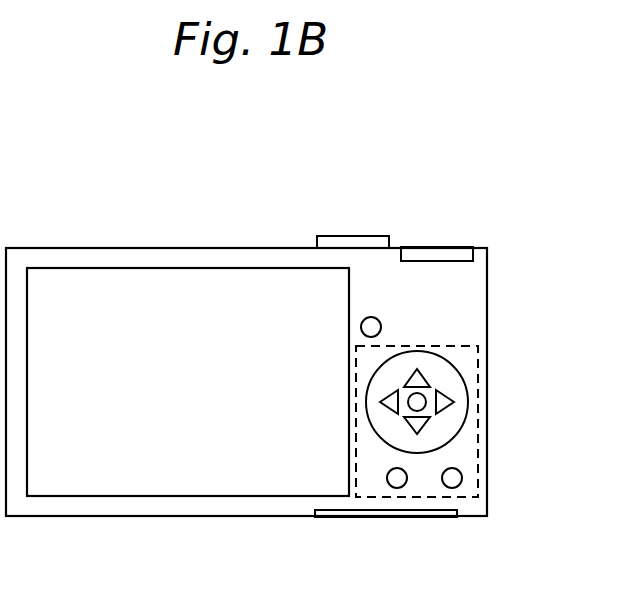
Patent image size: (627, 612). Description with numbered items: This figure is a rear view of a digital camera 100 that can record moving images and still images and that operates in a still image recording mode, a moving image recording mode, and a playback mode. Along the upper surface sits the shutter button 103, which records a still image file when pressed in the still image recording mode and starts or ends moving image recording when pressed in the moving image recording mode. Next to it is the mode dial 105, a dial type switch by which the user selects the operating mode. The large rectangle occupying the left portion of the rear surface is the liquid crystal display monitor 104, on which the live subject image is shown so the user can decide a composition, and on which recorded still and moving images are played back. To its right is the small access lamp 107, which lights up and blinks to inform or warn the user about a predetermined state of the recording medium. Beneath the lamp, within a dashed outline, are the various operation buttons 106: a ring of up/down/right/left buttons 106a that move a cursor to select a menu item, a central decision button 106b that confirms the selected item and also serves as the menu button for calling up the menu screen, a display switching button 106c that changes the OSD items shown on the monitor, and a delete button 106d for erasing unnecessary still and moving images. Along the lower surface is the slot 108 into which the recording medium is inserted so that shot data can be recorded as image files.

The digital camera 100 is at (228, 228).
The shutter button 103 is at (352, 234).
The liquid crystal display monitor 104 is at (92, 267).
The mode dial 105 is at (458, 247).
The operation buttons 106 is at (432, 346).
The up/down/right/left buttons 106a is at (410, 381).
The decision button 106b is at (424, 400).
The display switching button 106c is at (401, 481).
The delete button 106d is at (456, 481).
The access lamp 107 is at (380, 318).
The slot 108 is at (328, 517).